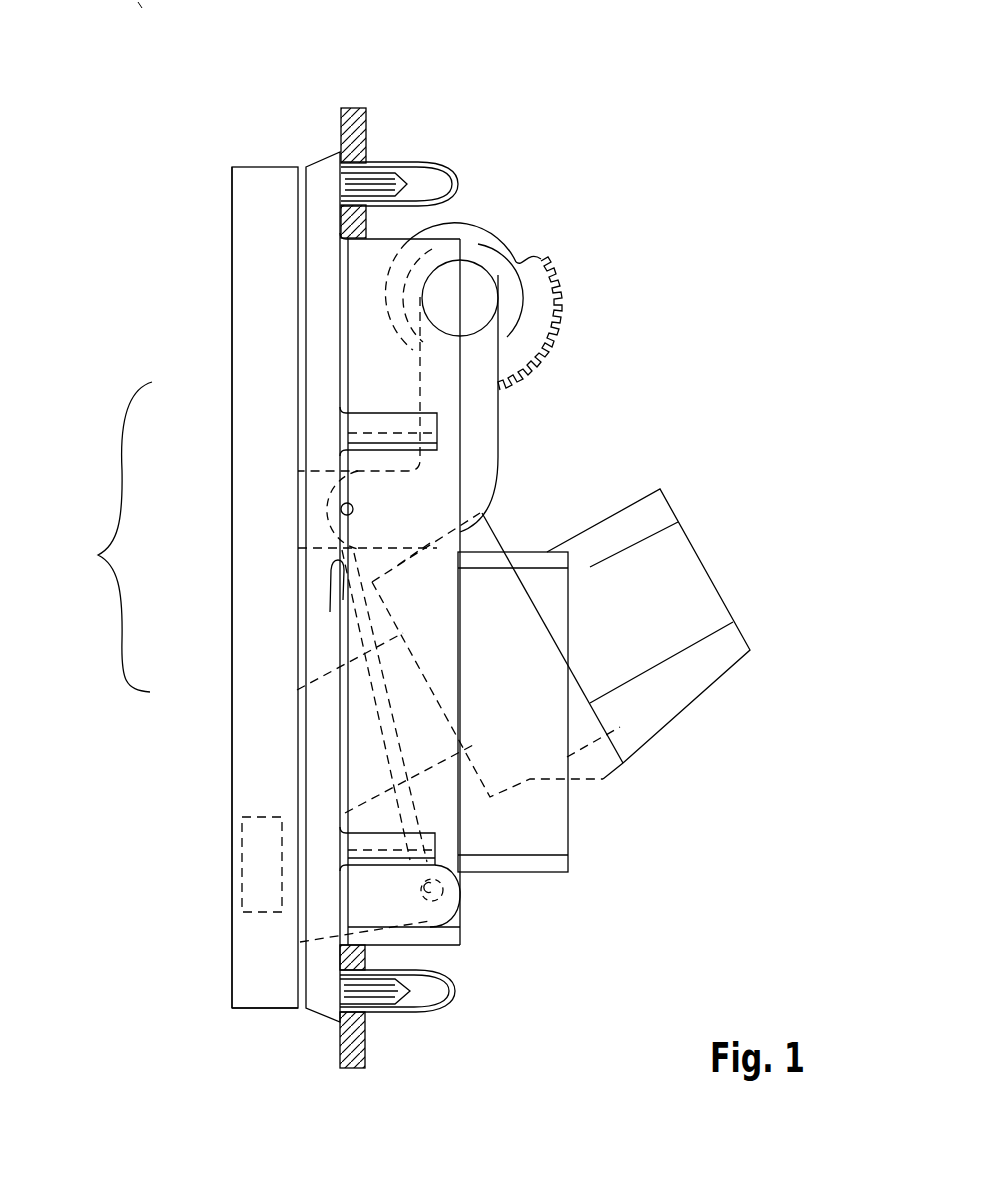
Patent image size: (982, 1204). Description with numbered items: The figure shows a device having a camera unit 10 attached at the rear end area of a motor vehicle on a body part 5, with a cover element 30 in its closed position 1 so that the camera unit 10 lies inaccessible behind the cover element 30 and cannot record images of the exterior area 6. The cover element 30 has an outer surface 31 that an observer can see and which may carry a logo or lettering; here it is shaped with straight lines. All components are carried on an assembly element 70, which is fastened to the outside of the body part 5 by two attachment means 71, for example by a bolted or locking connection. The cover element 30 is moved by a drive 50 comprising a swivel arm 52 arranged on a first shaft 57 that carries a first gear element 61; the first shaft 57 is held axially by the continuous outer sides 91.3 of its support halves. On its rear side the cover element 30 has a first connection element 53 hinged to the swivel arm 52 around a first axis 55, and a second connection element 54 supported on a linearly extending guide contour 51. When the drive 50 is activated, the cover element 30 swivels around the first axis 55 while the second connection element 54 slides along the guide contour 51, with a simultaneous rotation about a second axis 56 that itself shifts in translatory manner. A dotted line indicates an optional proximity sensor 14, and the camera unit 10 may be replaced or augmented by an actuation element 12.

The closed position 1 is at (165, 13).
The cover element 30 is at (263, 176).
The outer surface 31 is at (222, 231).
The exterior area 6 is at (160, 925).
The assembly element 70 is at (327, 178).
The body part 5 is at (358, 108).
The attachment means 71 is at (407, 178).
The outer sides of the support halves 91.3 is at (447, 277).
The first shaft 57 is at (448, 297).
The first gear element 61 is at (523, 339).
The drive 50 is at (273, 589).
The first axis 55 is at (343, 511).
The first connection element 53 is at (310, 537).
The swivel arm 52 is at (380, 528).
The guide contour 51 is at (352, 620).
The second connection element 54 is at (318, 823).
The second axis 56 is at (425, 888).
The camera unit 10 is at (713, 667).
The actuation element 12 is at (735, 684).
The proximity sensor 14 is at (257, 880).